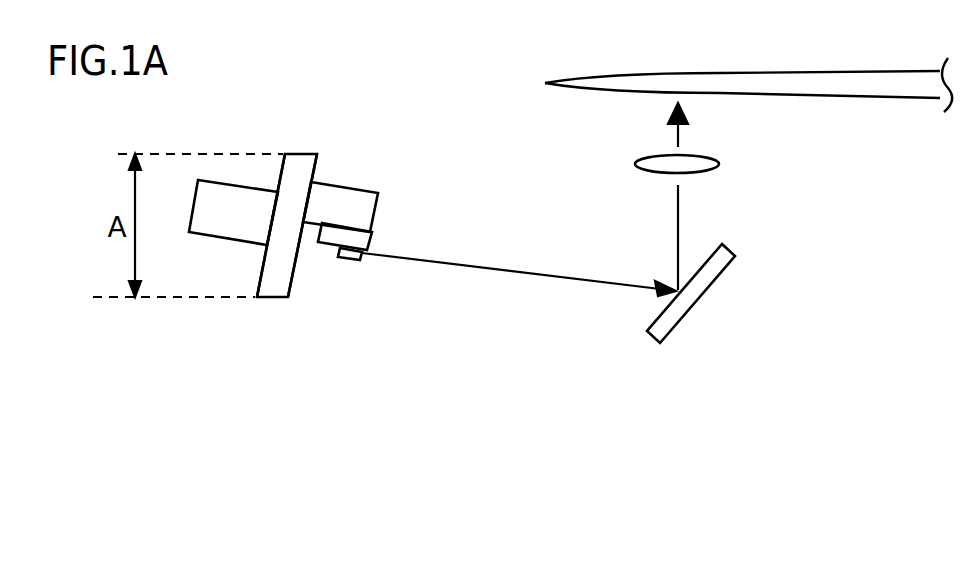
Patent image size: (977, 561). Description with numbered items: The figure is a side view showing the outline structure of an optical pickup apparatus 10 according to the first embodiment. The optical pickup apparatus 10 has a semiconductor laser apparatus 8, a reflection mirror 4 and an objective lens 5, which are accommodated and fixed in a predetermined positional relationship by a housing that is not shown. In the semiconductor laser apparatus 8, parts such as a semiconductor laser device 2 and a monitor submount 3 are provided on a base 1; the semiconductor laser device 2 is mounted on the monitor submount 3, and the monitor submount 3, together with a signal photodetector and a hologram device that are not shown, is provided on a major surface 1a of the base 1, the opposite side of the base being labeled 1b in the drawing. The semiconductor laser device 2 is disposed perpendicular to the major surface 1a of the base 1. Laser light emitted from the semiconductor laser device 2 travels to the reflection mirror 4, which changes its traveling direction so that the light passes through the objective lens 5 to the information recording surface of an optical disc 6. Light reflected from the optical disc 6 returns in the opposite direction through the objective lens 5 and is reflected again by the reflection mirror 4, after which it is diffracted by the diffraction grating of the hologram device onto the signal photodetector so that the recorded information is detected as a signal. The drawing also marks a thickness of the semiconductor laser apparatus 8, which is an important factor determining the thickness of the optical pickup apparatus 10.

The base 1 is at (280, 173).
The major surface 1a is at (303, 280).
The rear face of housing 1b is at (268, 303).
The semiconductor laser device 2 is at (355, 266).
The monitor submount 3 is at (370, 237).
The reflection mirror 4 is at (718, 287).
The objective lens 5 is at (695, 163).
The optical disc 6 is at (695, 85).
The semiconductor laser apparatus 8 is at (317, 124).
The optical pickup apparatus 10 is at (868, 159).